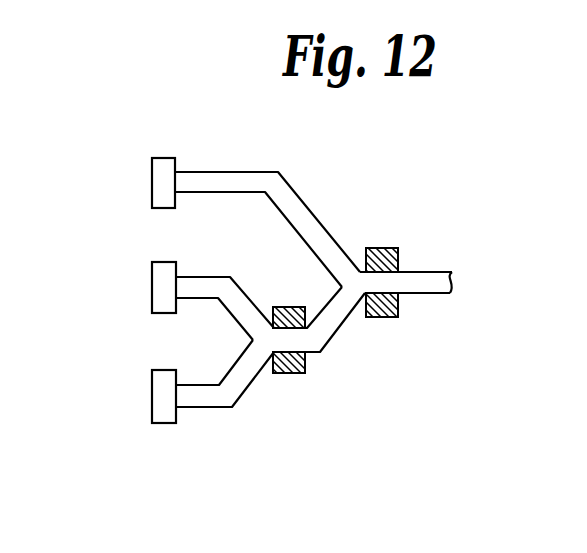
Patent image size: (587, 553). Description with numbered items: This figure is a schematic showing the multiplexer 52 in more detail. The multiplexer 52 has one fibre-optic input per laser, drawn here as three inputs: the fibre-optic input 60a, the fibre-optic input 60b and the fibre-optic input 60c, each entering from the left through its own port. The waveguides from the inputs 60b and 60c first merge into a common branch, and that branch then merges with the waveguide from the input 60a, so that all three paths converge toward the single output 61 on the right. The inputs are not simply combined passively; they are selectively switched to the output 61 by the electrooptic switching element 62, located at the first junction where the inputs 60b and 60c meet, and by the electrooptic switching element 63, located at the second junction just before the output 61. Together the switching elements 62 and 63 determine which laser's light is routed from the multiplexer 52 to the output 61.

The multiplexer 52 is at (289, 184).
The fibre-optic input 60a is at (160, 182).
The fibre-optic input 60b is at (160, 293).
The fibre-optic input 60c is at (160, 403).
The output 61 is at (450, 286).
The electrooptic switching element 62 is at (288, 373).
The electrooptic switching element 63 is at (396, 252).